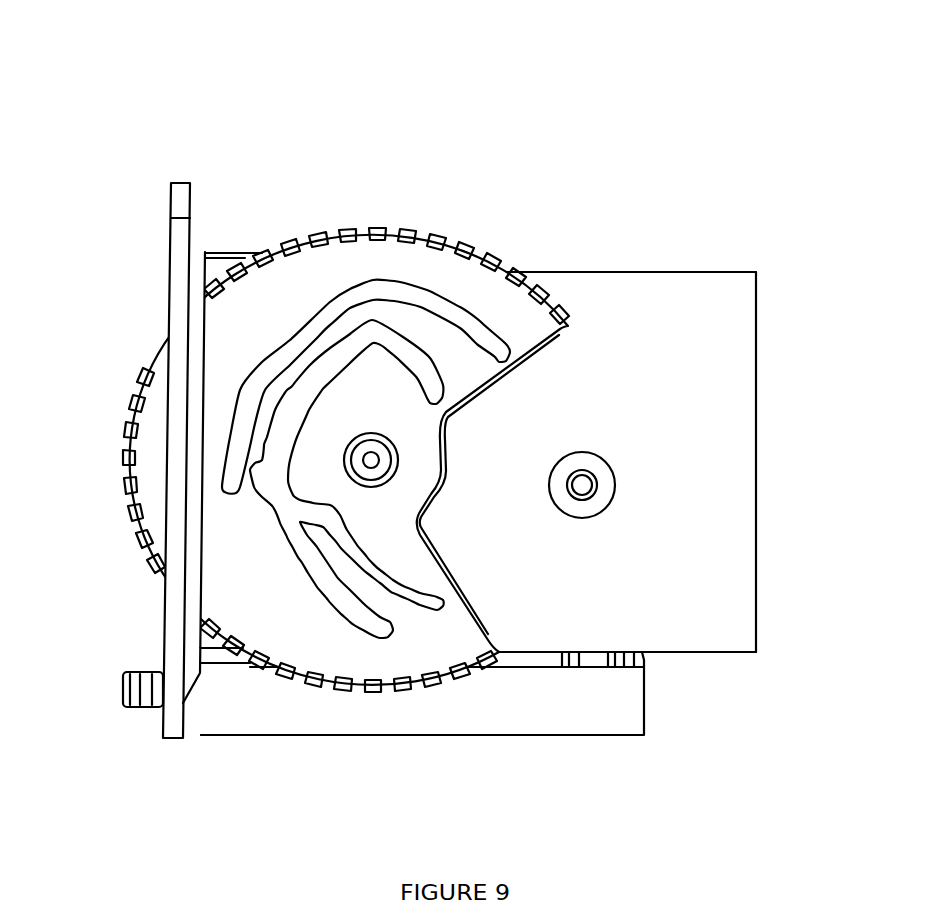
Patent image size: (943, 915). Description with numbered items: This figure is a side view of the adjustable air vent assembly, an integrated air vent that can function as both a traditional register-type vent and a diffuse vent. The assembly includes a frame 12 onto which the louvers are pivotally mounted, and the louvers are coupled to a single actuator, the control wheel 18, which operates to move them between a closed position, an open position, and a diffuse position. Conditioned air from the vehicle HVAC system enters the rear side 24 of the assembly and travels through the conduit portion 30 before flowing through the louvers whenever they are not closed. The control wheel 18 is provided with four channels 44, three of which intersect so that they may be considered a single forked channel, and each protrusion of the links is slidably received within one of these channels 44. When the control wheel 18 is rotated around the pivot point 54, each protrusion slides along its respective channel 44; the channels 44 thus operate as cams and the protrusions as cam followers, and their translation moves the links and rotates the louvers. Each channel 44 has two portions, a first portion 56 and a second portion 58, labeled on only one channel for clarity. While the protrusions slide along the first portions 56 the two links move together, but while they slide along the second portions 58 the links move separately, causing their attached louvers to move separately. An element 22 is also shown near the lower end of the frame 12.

The mounting plate 12 is at (177, 267).
The cam wheel 18 is at (485, 295).
The screw 22 is at (127, 707).
The housing 24 is at (755, 433).
The motor housing 30 is at (670, 305).
The cam assembly 44 is at (366, 353).
The pivot pin 54 is at (372, 458).
The cam slot 56 is at (323, 327).
The guide slot 58 is at (433, 303).